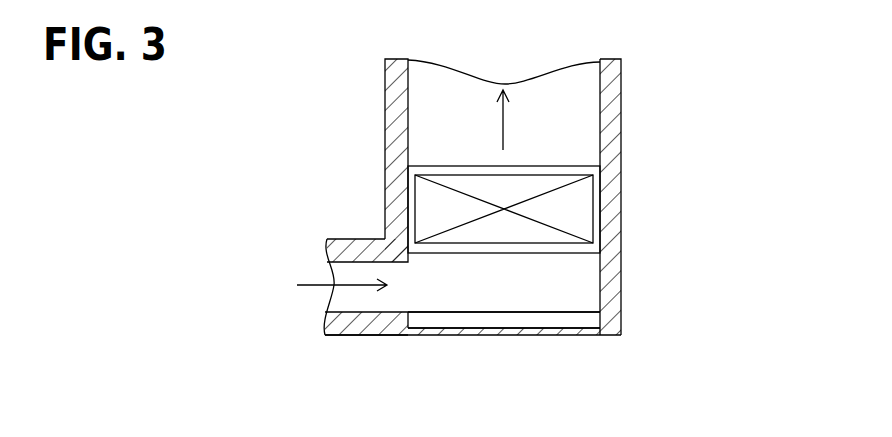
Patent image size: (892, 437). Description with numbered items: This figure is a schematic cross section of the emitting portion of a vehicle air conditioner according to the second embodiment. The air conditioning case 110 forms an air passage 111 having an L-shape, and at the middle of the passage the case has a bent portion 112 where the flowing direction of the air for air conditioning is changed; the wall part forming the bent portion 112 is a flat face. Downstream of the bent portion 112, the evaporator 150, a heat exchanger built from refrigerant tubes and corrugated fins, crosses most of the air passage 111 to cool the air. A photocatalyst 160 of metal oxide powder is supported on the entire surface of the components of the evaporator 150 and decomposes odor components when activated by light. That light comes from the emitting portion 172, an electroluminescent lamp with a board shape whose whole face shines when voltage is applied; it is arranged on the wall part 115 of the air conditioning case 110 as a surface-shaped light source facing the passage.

The air conditioning case 110 is at (355, 336).
The air passage 111 is at (432, 283).
The bent portion 112 is at (555, 337).
The wall part 115 is at (480, 336).
The evaporator 150 is at (580, 198).
The photocatalyst 160 is at (597, 218).
The emitting portion 172 is at (582, 320).